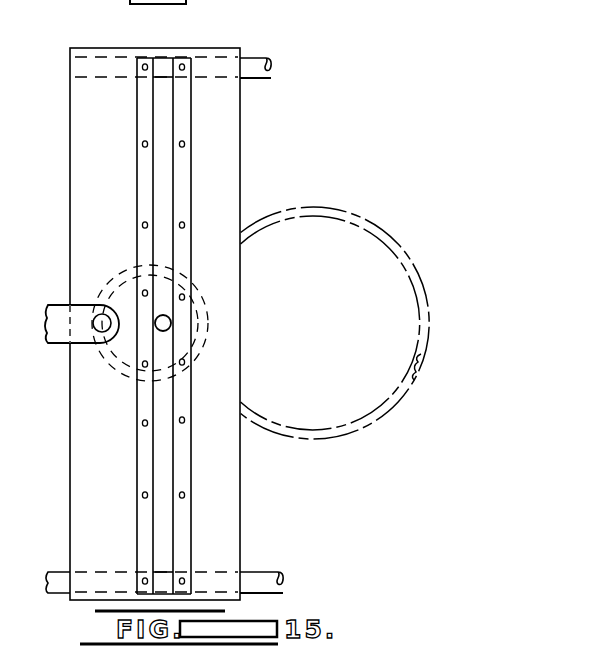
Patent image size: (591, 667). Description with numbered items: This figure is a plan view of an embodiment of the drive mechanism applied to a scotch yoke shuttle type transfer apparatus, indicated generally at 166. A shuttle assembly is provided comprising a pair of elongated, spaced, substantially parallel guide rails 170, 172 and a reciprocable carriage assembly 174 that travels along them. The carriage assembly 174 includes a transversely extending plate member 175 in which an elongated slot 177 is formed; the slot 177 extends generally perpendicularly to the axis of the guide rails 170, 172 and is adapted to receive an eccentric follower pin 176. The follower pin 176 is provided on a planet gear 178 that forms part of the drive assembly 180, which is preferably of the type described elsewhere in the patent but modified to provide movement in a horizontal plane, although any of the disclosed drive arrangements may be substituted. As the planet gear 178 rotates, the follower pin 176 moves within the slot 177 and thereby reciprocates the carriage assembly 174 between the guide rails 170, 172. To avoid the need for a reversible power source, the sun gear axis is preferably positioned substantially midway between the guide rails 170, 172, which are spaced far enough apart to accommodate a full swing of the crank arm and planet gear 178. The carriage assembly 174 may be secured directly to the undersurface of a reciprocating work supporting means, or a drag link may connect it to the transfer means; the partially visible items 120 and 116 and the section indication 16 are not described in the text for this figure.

The scotch yoke shuttle type transfer apparatus embodiment 166 is at (283, 78).
The guide rail 170 is at (256, 60).
The guide rail 172 is at (258, 578).
The carriage assembly 174 is at (73, 172).
The plate 175 is at (226, 151).
The eccentric follower pin 176 is at (167, 316).
The elongated slot 177 is at (163, 91).
The planet gear 178 is at (114, 382).
The drive assembly 180 is at (366, 220).
The arm 120 is at (59, 310).
The member 116 is at (2, 394).
The section line 16- 16 is at (223, 323).